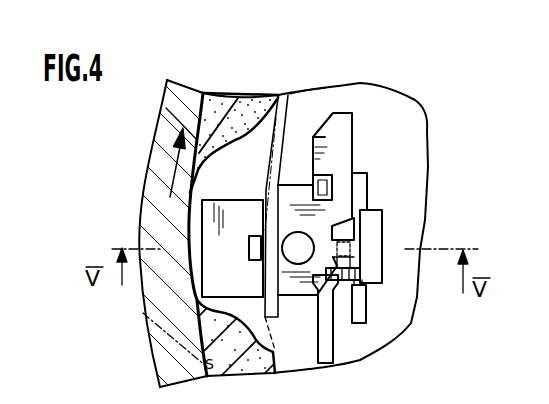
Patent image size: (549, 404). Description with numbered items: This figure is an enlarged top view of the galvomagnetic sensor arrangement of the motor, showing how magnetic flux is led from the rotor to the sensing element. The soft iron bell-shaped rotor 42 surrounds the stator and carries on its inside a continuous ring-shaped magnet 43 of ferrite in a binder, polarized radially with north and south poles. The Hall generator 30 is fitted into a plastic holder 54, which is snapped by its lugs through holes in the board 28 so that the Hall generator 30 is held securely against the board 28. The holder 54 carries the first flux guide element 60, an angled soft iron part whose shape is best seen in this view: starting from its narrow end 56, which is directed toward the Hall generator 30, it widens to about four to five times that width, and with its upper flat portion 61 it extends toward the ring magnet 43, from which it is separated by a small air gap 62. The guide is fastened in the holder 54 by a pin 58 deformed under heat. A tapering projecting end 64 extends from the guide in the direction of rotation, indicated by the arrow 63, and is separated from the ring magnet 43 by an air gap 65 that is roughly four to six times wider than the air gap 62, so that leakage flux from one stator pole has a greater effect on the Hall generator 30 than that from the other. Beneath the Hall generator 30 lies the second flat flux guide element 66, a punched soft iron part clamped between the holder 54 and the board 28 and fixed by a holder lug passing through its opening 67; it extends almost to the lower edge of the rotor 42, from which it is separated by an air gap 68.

The board 28 is at (402, 103).
The Hall generator 30 is at (343, 250).
The bell-shaped rotor 42 is at (163, 138).
The ring-shaped magnet 43 is at (235, 105).
The plastic holder 54 is at (370, 260).
The narrow end 56 is at (343, 295).
The pin 58 is at (298, 248).
The flux guide element 60 is at (362, 165).
The upper flat portion 61 is at (293, 283).
The air gap 62 is at (272, 183).
The arrow indicating direction of rotation 63 is at (165, 104).
The tapering projecting end 64 is at (343, 114).
The air gap 65 is at (302, 105).
The second flux guide element 66 is at (242, 207).
The opening 67 is at (252, 257).
The air gap 68 is at (143, 288).